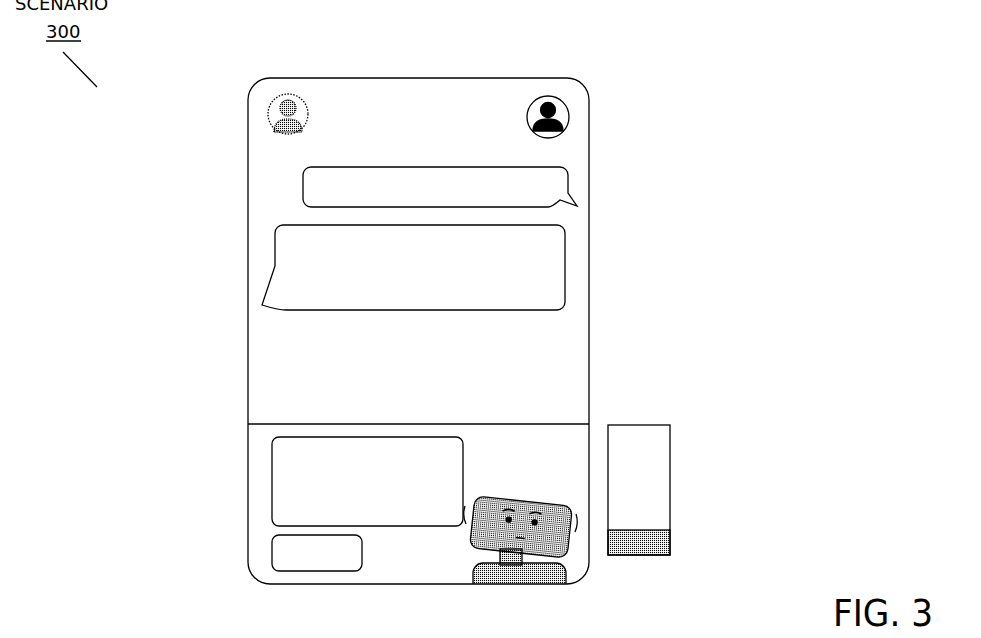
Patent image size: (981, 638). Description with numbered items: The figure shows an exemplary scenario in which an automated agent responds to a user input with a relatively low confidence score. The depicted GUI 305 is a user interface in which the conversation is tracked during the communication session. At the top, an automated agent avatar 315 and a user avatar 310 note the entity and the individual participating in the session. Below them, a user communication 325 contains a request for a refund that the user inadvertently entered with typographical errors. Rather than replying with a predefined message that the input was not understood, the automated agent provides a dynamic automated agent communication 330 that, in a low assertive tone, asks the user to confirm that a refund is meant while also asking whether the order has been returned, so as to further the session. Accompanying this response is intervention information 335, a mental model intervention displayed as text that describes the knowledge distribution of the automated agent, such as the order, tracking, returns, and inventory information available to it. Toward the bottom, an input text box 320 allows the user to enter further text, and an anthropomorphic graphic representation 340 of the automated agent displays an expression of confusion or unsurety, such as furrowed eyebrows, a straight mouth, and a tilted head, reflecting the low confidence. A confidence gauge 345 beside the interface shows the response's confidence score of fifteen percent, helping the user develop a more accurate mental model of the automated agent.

The GUI 305 is at (795, 83).
The user avatar 310 is at (556, 103).
The automated agent avatar 315 is at (285, 103).
The input text box 320 is at (283, 475).
The user communication 325 is at (553, 188).
The automated agent communication 330 is at (275, 255).
The intervention information 335 is at (284, 323).
The anthropomorphic graphic representation 340 is at (497, 565).
The confidence gauge 345 is at (655, 475).